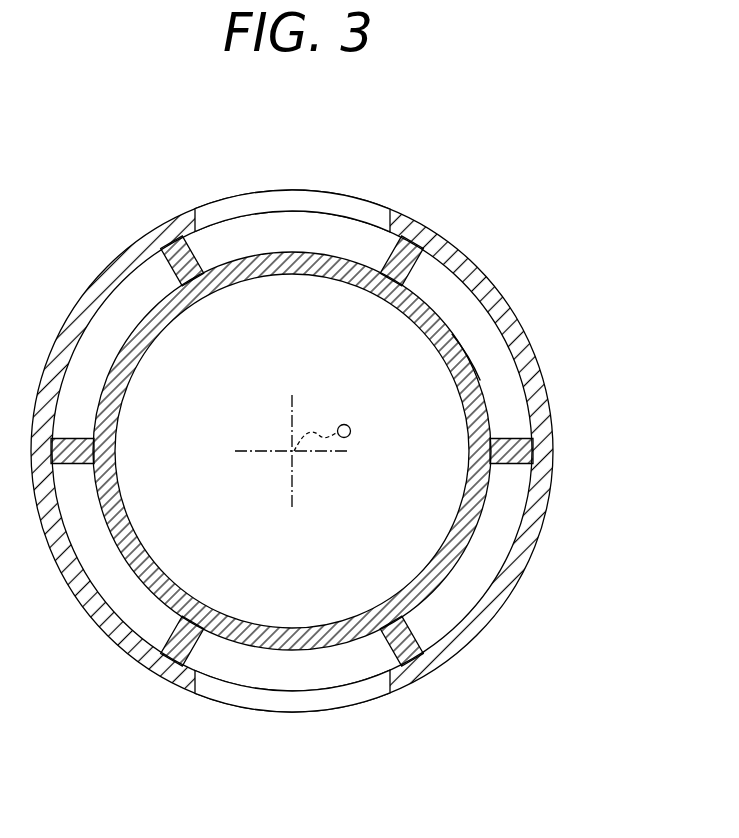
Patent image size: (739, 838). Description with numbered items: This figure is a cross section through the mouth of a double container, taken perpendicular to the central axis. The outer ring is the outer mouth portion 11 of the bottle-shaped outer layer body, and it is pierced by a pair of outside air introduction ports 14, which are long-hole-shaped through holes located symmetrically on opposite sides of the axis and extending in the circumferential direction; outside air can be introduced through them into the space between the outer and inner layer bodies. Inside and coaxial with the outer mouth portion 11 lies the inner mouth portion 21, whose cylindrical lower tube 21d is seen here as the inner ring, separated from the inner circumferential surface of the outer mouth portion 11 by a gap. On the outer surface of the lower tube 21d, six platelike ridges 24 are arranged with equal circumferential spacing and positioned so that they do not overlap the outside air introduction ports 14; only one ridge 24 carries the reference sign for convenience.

The outer mouth portion 11 is at (522, 317).
The outside air introduction port 14 is at (296, 187).
The inner mouth portion 21 is at (448, 371).
The lower tube 21d is at (468, 399).
The ridge 24 is at (513, 450).